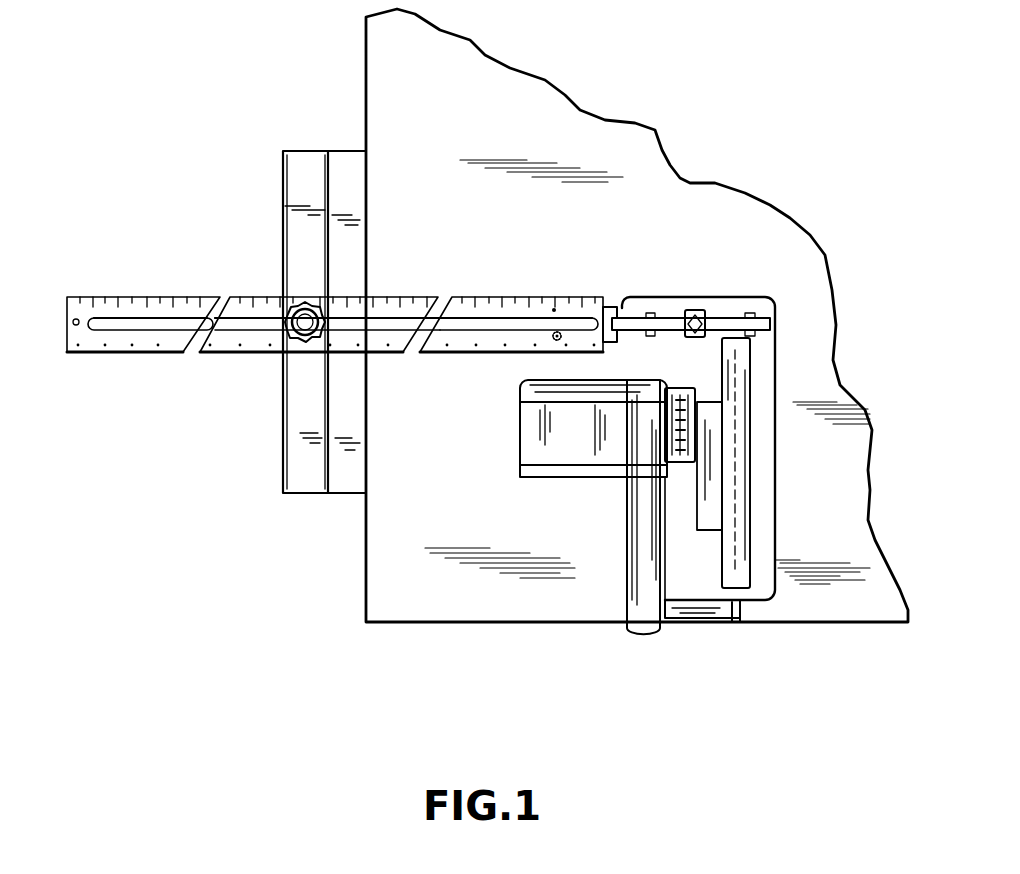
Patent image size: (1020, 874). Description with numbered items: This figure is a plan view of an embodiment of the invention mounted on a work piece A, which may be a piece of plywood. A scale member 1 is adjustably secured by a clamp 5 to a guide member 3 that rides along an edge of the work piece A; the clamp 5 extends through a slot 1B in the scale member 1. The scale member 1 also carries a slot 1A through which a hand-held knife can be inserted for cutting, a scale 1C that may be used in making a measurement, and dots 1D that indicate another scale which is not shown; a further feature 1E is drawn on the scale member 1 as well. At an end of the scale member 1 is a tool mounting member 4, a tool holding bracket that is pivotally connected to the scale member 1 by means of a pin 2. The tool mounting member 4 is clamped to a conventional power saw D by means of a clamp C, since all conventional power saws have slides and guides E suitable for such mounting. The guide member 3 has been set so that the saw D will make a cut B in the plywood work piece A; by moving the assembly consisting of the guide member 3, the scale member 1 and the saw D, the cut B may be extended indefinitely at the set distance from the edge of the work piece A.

The scale member 1 is at (331, 324).
The slot 1A is at (73, 321).
The slot 1B is at (136, 320).
The scale 1C is at (415, 278).
The dots 1D is at (160, 350).
The adjusting screw 1E is at (568, 344).
The pin 2 is at (612, 307).
The guide member 3 is at (312, 488).
The tool mounting member 4 is at (768, 322).
The clamp 5 is at (300, 303).
The work piece A is at (366, 590).
The cut B is at (736, 622).
The clamp C is at (694, 310).
The power saw D is at (750, 508).
The slides and guides E is at (762, 297).